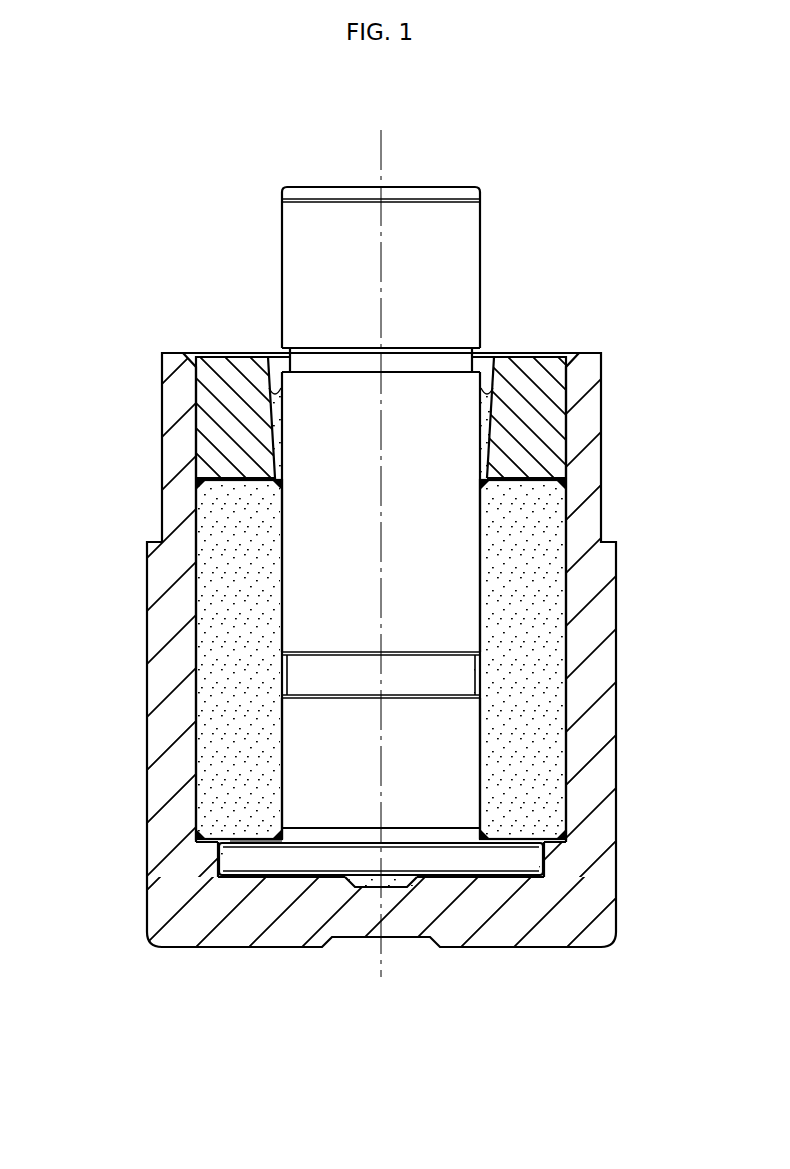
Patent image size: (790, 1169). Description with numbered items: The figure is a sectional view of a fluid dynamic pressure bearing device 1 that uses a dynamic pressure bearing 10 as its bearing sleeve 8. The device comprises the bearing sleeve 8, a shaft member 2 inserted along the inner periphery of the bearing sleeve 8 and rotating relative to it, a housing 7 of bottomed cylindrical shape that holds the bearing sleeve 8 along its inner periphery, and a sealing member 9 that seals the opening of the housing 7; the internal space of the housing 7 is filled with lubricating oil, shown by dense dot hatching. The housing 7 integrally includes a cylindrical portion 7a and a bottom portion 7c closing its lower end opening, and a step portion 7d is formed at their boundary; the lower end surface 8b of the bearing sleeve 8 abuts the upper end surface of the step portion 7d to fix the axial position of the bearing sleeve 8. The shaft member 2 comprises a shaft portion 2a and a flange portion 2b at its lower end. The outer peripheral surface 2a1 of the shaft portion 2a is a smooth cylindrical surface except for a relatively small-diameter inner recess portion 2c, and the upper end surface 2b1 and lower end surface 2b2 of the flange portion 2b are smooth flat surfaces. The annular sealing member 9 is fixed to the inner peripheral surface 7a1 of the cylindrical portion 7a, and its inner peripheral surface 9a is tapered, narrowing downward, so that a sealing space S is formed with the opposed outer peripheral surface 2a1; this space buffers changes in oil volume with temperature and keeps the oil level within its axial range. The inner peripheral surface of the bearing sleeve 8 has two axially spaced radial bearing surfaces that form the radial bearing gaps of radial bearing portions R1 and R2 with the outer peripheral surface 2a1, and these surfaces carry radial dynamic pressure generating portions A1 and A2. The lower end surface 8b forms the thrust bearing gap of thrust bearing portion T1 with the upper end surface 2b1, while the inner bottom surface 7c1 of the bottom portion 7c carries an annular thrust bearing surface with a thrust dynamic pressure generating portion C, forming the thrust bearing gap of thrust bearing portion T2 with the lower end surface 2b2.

The fluid dynamic pressure bearing device 1 is at (610, 265).
The shaft member 2 is at (481, 229).
The shaft portion 2a is at (425, 222).
The outer peripheral surface of the shaft portion 2a1 is at (481, 613).
The flange portion 2b is at (430, 858).
The upper end surface of the flange portion 2b1 is at (515, 843).
The lower end surface of the flange portion 2b2 is at (512, 877).
The inner recess portion 2c is at (460, 678).
The housing 7 is at (161, 378).
The cylindrical portion 7a is at (172, 675).
The inner peripheral surface of the cylindrical portion 7a1 is at (554, 565).
The bottom portion 7c is at (310, 922).
The inner bottom surface of the bottom portion 7c1 is at (217, 878).
The step portion 7d is at (203, 857).
The bearing sleeve 8 is at (235, 526).
The dynamic pressure bearing 10 is at (381, 683).
The lower end surface of the bearing sleeve 8b is at (262, 842).
The sealing member 9 is at (224, 380).
The inner peripheral surface of the sealing member 9a is at (487, 370).
The sealing space S is at (274, 385).
The radial dynamic pressure generating portion A1 is at (470, 573).
The radial dynamic pressure generating portion A2 is at (470, 782).
The radial bearing portion R1 is at (282, 575).
The radial bearing portion R2 is at (282, 768).
The thrust bearing portion T1 is at (245, 838).
The thrust bearing portion T2 is at (498, 877).
The thrust dynamic pressure generating portion C is at (488, 873).